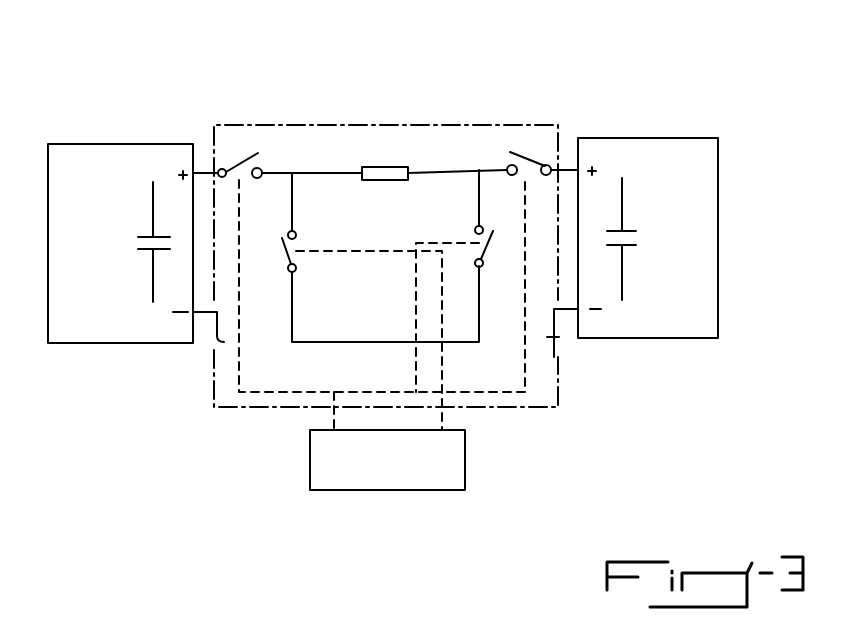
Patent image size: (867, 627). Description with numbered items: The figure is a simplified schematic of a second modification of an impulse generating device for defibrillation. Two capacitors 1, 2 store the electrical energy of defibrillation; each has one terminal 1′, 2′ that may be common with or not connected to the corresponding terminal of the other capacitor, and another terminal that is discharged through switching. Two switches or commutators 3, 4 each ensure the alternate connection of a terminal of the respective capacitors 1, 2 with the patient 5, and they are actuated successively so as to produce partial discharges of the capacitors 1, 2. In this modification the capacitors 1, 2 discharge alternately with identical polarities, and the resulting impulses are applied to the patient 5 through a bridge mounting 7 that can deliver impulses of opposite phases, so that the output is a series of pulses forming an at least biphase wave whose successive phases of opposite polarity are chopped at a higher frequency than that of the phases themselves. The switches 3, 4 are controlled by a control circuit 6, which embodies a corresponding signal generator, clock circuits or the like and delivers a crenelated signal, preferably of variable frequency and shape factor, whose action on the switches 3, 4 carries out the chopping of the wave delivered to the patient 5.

The capacitor 1 is at (80, 163).
The capacitor 2 is at (642, 153).
The terminal of capacitor 1′ is at (210, 314).
The terminal of capacitor 2′ is at (562, 310).
The switch 3 is at (250, 163).
The switch 4 is at (520, 152).
The patient 5 is at (370, 168).
The control circuit 6 is at (346, 490).
The bridge mounting 7 is at (532, 410).